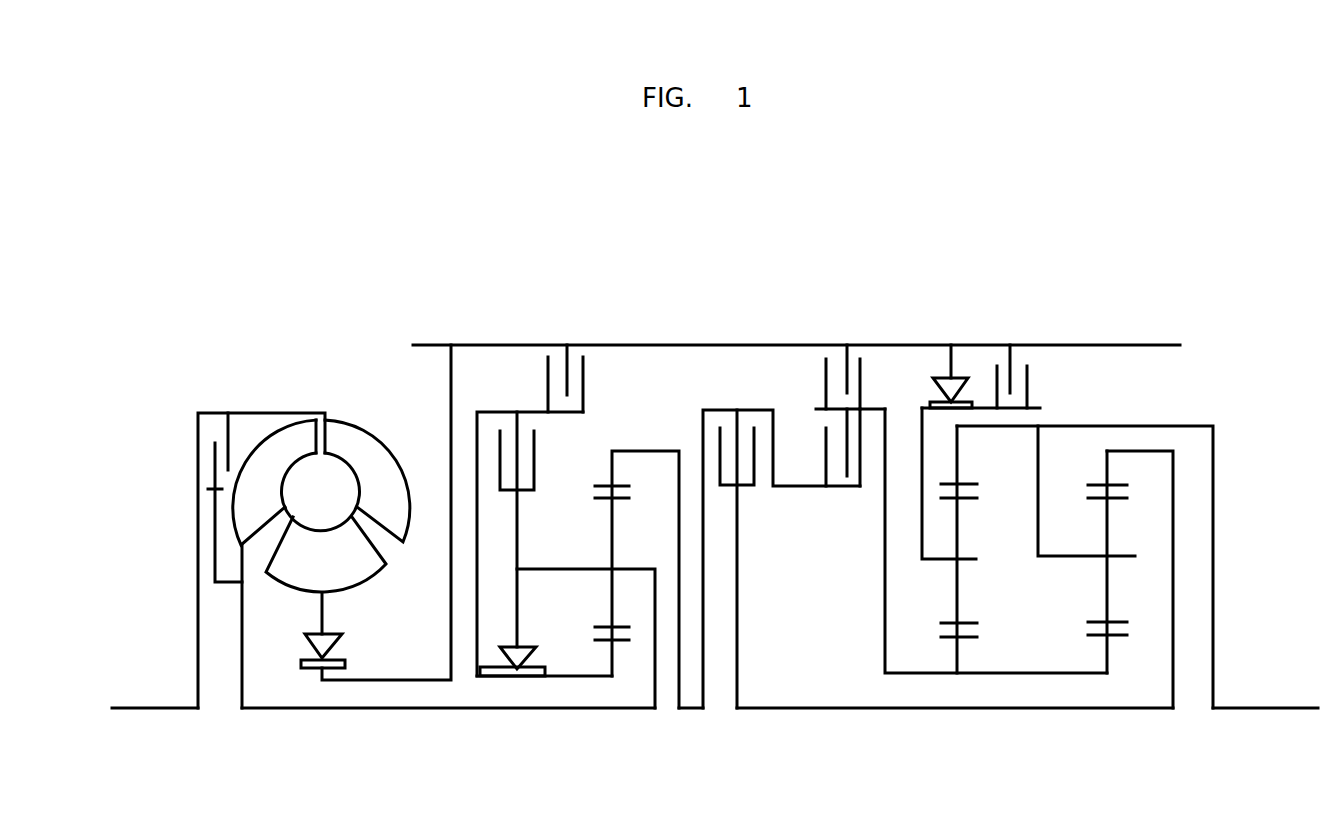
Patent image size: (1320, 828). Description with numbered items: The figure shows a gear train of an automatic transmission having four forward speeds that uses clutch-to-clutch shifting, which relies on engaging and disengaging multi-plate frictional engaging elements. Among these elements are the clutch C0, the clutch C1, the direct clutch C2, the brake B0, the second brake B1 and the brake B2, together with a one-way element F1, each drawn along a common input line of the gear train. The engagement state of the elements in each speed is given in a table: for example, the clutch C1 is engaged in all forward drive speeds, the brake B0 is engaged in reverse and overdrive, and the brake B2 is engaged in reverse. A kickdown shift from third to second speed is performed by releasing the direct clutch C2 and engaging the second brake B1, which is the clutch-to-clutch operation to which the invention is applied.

The clutch C0 is at (498, 403).
The brake B0 is at (590, 384).
The clutch C1 is at (732, 404).
The second brake B1 is at (816, 377).
The direct clutch C2 is at (868, 440).
The one-way clutch F1 is at (962, 373).
The brake B2 is at (1033, 375).